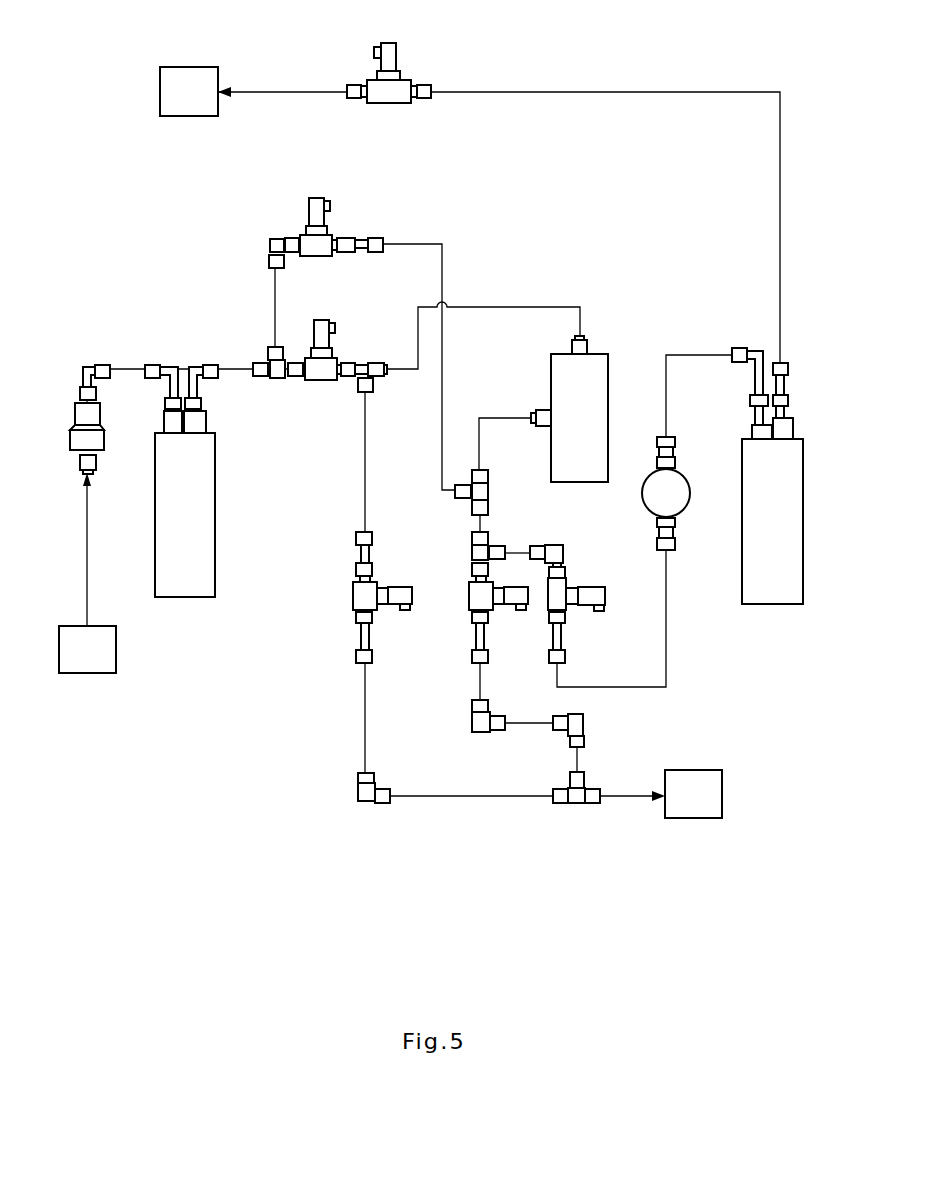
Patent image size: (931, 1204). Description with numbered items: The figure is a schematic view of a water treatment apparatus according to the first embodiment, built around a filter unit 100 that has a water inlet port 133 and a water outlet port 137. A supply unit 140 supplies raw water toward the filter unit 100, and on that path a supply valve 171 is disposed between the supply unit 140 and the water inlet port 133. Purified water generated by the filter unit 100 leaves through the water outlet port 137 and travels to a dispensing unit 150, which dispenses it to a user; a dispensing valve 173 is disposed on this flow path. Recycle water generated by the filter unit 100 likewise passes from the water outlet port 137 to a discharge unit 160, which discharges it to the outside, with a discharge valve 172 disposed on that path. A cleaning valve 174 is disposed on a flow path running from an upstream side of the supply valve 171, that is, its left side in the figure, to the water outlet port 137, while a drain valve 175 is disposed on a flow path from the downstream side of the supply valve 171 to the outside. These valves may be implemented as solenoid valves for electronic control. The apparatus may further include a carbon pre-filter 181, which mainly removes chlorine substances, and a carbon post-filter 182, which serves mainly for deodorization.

The filter unit 100 is at (551, 354).
The water inlet port 133 is at (581, 335).
The water outlet port 137 is at (537, 427).
The supply unit 140 is at (87, 674).
The dispensing unit 150 is at (187, 66).
The discharge unit 160 is at (693, 819).
The supply valve 171 is at (321, 319).
The discharge valve 172 is at (469, 612).
The dispensing valve 173 is at (596, 587).
The cleaning valve 174 is at (322, 195).
The drain valve 175 is at (352, 594).
The carbon pre-filter 181 is at (183, 598).
The carbon post-filter 182 is at (771, 605).